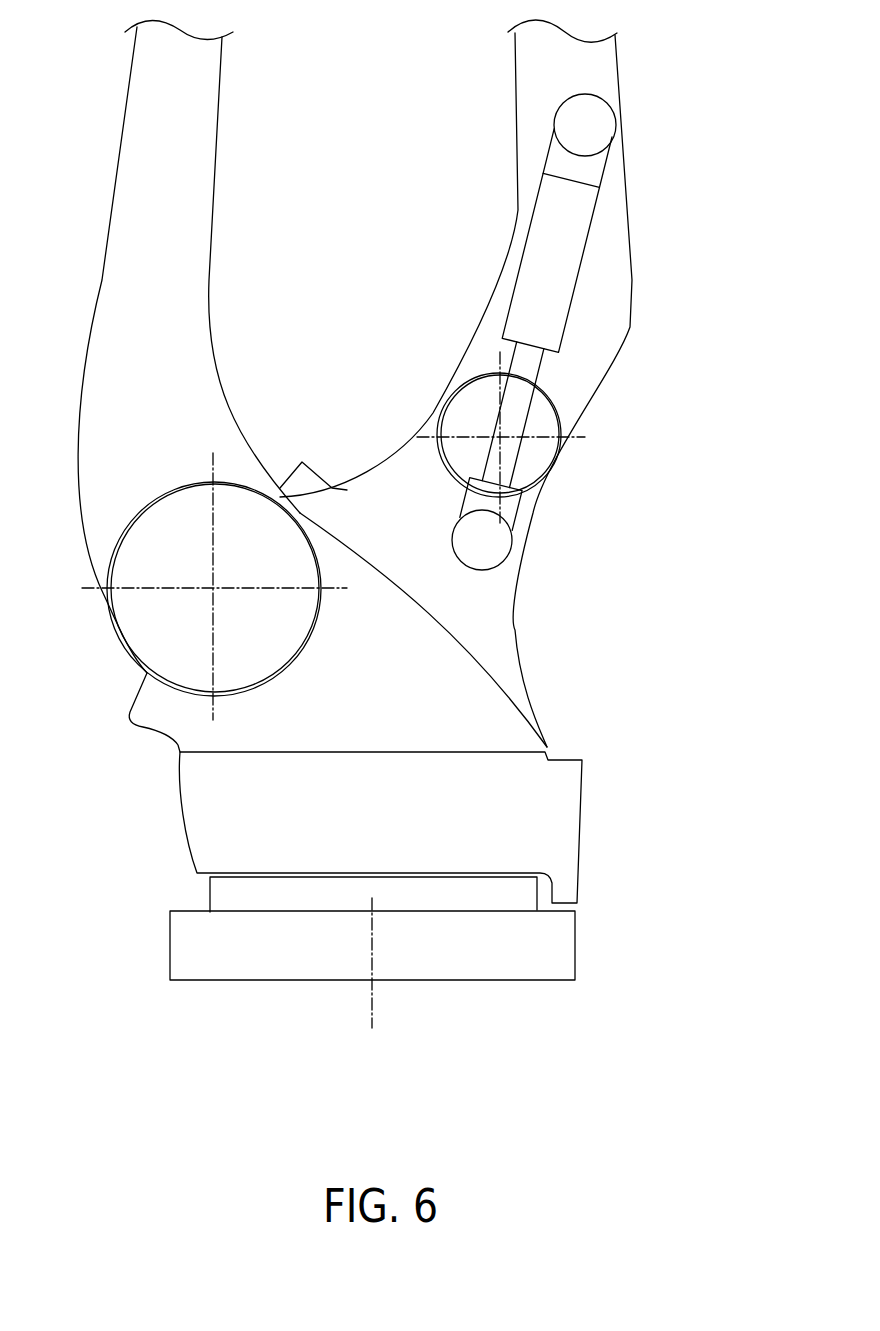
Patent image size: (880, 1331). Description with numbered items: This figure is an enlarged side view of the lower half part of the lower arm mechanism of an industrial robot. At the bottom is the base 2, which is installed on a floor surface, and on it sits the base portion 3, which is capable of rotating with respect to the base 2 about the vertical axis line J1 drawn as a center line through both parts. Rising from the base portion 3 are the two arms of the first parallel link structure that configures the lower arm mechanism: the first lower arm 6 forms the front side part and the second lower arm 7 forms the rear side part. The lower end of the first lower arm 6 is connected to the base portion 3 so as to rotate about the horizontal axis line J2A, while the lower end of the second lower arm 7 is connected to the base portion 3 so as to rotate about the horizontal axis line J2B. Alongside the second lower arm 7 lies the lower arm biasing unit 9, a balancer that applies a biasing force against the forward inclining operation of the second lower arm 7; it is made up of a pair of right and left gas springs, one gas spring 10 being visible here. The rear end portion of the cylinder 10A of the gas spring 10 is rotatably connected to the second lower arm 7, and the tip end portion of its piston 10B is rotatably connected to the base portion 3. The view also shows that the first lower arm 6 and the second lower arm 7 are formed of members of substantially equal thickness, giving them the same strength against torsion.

The base 2 is at (575, 947).
The base portion 3 is at (575, 825).
The first lower arm 6 is at (120, 217).
The second lower arm 7 is at (622, 205).
The lower arm biasing unit 9 is at (578, 332).
The gas spring 10 is at (703, 343).
The cylinder 10A is at (557, 275).
The piston 10B is at (528, 367).
The vertical axis line J1 is at (372, 1008).
The horizontal axis line J2A is at (212, 588).
The horizontal axis line J2B is at (500, 437).